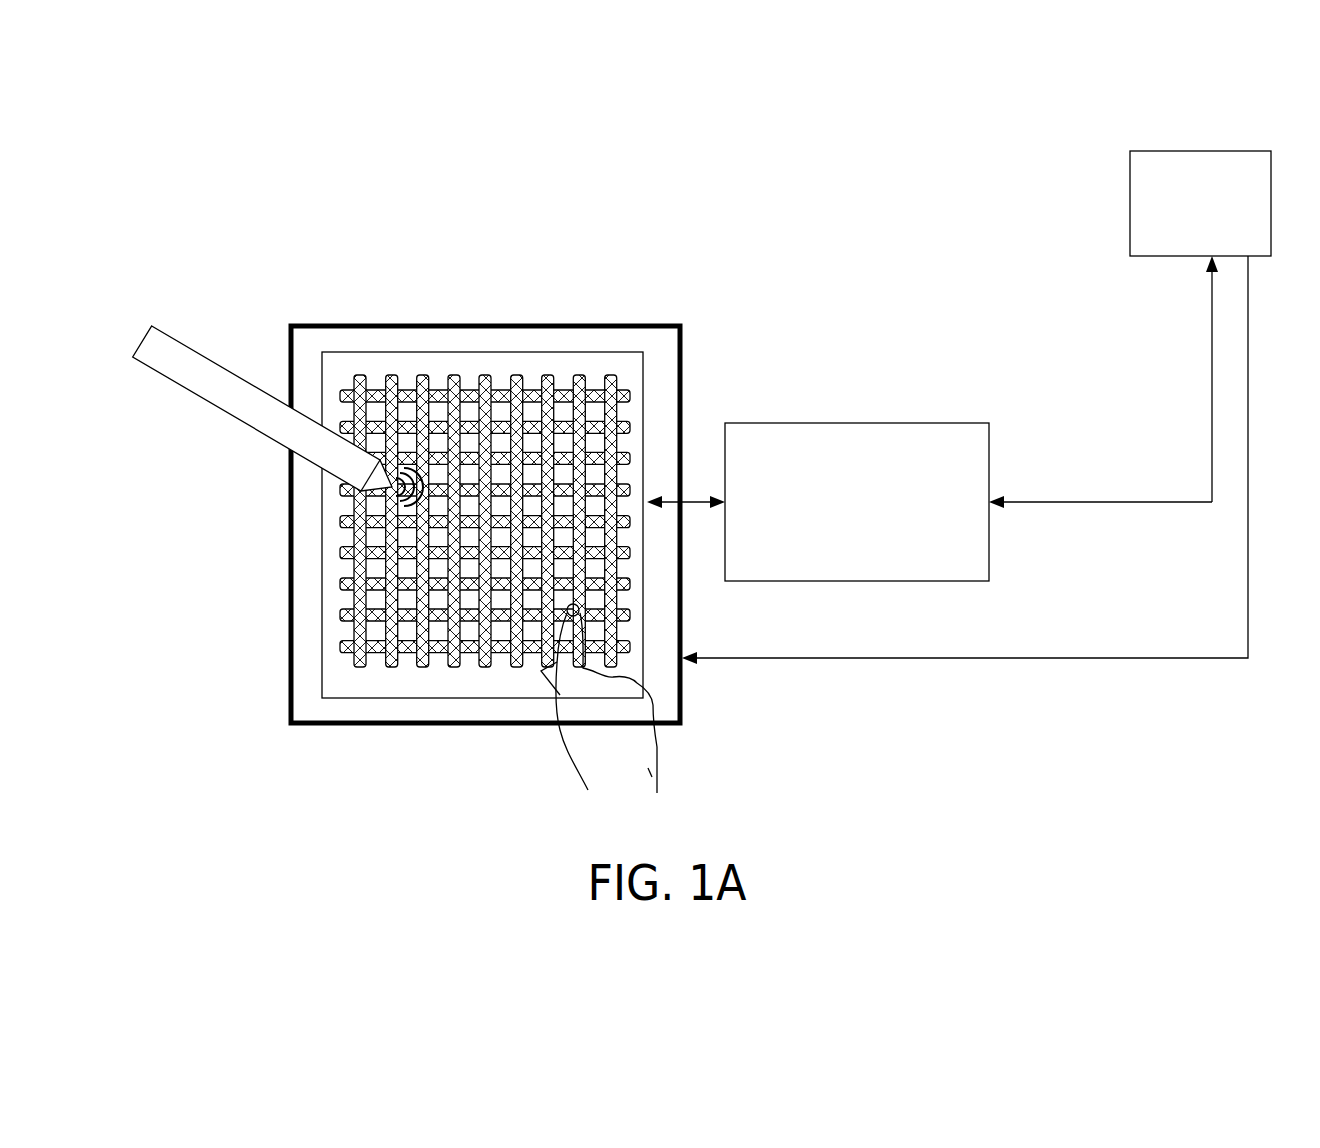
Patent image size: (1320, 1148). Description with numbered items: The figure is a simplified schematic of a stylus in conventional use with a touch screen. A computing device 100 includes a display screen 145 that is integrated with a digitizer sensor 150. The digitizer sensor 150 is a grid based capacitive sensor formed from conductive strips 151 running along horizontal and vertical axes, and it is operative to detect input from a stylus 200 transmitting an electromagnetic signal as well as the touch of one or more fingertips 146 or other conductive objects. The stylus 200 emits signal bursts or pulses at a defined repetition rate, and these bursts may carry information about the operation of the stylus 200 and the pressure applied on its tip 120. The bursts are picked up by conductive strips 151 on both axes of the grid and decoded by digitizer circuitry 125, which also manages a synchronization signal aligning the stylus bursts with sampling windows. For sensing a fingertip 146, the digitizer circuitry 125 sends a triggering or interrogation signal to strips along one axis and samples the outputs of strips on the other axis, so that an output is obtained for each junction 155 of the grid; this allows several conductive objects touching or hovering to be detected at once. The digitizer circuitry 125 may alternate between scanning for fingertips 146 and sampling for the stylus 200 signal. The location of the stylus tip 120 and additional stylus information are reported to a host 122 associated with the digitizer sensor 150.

The computing device 100 is at (480, 236).
The tip 120 is at (378, 488).
The host 122 is at (1178, 152).
The digitizer circuitry 125 is at (930, 423).
The display screen 145 is at (607, 323).
The fingertip 146 is at (566, 618).
The digitizer sensor 150 is at (653, 397).
The conductive strips 151 is at (414, 515).
The junction 155 is at (452, 615).
The stylus 200 is at (263, 388).